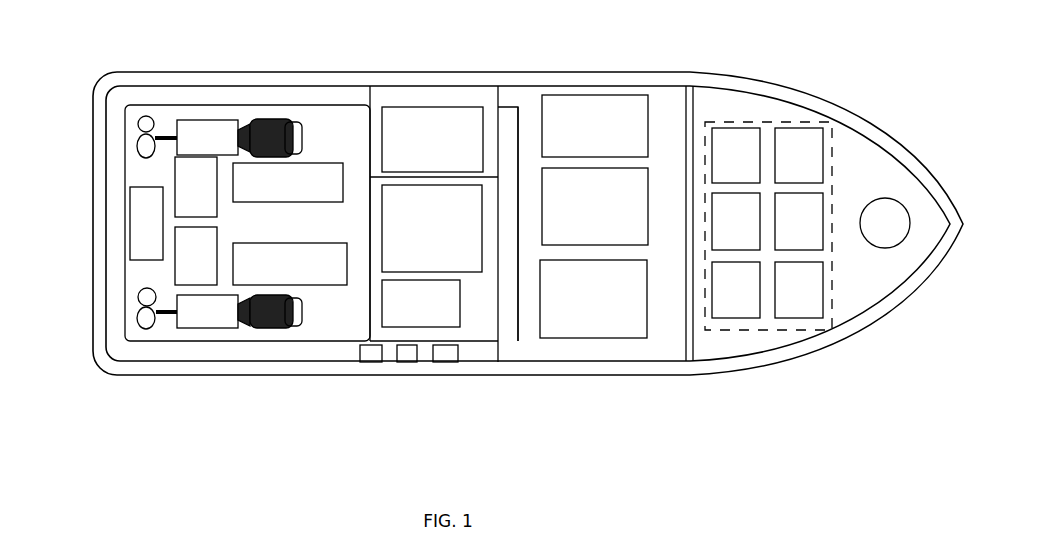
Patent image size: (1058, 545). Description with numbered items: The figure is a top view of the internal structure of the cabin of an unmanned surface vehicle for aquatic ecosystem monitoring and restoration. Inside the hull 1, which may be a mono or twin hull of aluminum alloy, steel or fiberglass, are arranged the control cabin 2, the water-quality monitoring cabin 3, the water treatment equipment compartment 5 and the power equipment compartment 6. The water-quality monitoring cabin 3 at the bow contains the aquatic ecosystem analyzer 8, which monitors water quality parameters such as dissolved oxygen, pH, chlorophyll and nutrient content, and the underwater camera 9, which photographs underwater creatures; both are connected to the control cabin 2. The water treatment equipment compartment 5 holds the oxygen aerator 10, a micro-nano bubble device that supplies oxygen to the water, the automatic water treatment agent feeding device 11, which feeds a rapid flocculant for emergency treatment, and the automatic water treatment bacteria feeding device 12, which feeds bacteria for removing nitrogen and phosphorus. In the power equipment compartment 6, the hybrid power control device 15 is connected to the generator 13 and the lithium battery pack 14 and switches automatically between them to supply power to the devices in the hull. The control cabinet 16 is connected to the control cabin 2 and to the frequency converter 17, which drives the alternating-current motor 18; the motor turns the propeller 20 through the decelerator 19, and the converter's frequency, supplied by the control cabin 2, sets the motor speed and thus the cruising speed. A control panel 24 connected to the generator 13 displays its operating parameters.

The hull 1 is at (306, 72).
The control cabin 2 is at (508, 118).
The water-quality monitoring cabin 3 is at (868, 157).
The water treatment equipment compartment 5 is at (650, 115).
The power equipment compartment 6 is at (357, 292).
The aquatic ecosystem analyzer 8 is at (792, 122).
The underwater camera 9 is at (898, 197).
The oxygen aerator 10 is at (603, 95).
The automatic water treatment agent feeding device 11 is at (648, 185).
The automatic water treatment bacteria feeding device 12 is at (647, 283).
The generator 13 is at (380, 198).
The lithium battery pack 14 is at (307, 163).
The hybrid power control device 15 is at (423, 105).
The control cabinet 16 is at (130, 238).
The frequency converter 17 is at (217, 205).
The alternating-current motor 18 is at (286, 328).
The decelerator 19 is at (217, 318).
The propeller 20 is at (143, 334).
The control panel 24 is at (420, 328).